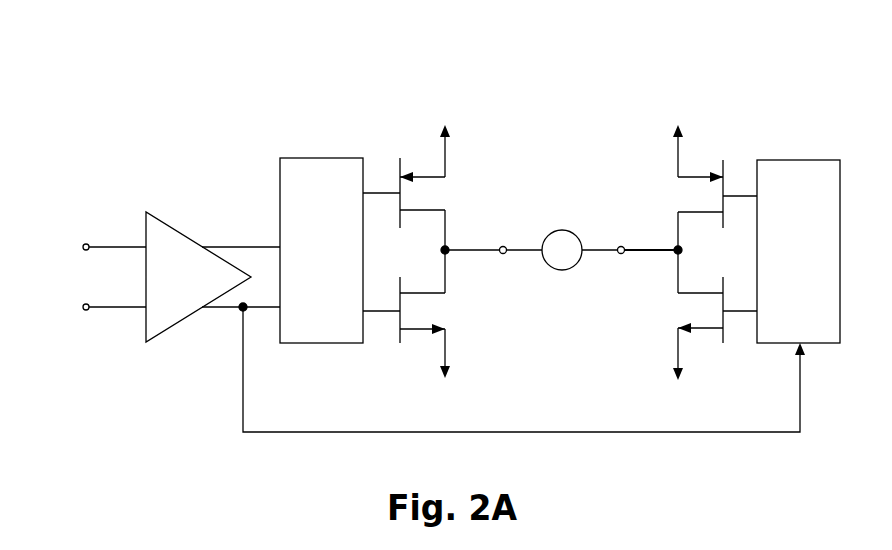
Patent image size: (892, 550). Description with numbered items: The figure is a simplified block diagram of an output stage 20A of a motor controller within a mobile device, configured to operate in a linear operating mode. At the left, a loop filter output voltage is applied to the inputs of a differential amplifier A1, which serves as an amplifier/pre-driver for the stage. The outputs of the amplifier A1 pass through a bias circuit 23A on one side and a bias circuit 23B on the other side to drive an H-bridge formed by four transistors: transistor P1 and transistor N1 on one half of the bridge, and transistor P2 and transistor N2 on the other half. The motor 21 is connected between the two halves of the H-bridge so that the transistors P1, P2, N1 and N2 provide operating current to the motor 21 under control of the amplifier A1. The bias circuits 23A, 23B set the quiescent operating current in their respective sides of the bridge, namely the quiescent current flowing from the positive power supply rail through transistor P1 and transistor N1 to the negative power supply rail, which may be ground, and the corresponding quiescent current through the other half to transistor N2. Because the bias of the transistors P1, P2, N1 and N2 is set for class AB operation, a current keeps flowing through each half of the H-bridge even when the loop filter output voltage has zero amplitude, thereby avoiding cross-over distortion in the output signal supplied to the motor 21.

The output stage 20A is at (606, 73).
The motor 21 is at (565, 230).
The bias circuit 23A is at (321, 250).
The bias circuit 23B is at (798, 251).
The differential amplifier A1 is at (198, 277).
The transistor P1 is at (406, 187).
The transistor N1 is at (406, 312).
The transistor P2 is at (715, 187).
The transistor N2 is at (715, 312).